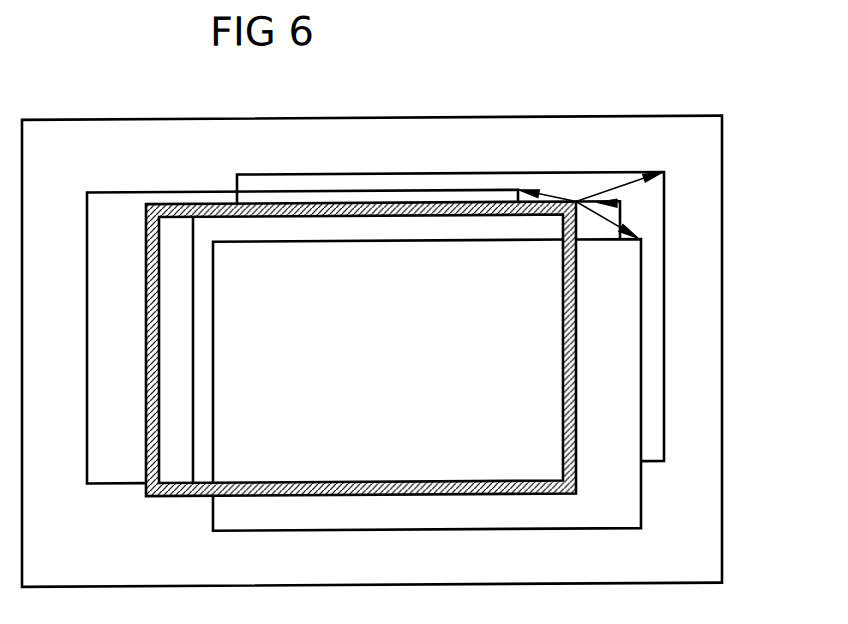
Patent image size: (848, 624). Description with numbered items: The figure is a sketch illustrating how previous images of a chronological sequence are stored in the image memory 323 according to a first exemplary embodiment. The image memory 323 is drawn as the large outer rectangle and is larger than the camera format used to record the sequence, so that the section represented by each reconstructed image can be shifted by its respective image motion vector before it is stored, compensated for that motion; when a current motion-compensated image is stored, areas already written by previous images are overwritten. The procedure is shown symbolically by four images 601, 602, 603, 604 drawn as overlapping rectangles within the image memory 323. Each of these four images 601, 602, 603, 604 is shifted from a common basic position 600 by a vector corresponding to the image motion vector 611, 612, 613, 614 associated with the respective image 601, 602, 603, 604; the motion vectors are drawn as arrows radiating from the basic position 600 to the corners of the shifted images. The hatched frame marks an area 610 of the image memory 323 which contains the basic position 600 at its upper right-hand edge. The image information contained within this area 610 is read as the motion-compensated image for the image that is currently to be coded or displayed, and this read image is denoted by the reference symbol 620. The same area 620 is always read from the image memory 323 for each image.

The image memory 323 is at (722, 381).
The basic position 600 is at (576, 205).
The image 601 is at (641, 508).
The image 602 is at (576, 205).
The image 603 is at (180, 193).
The image 604 is at (313, 176).
The area of the image memory 610 is at (178, 499).
The image motion vector 611 is at (598, 216).
The image motion vector 612 is at (615, 208).
The image motion vector 613 is at (540, 214).
The image motion vector 614 is at (578, 205).
The read image 620 is at (323, 390).